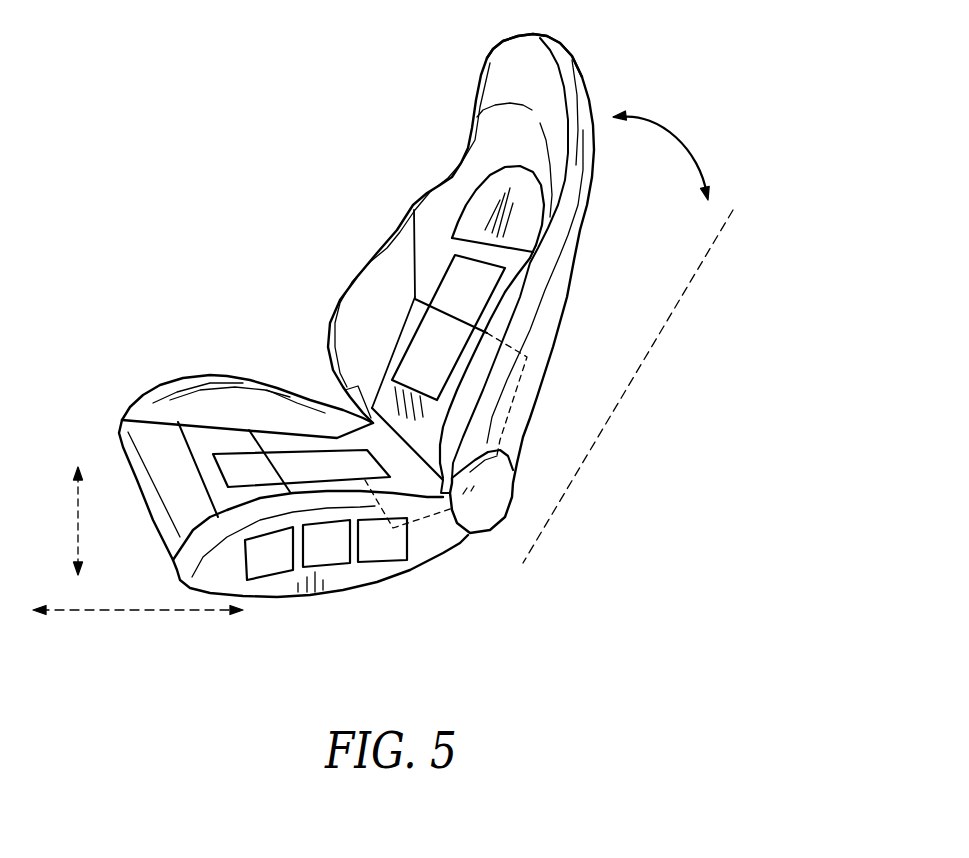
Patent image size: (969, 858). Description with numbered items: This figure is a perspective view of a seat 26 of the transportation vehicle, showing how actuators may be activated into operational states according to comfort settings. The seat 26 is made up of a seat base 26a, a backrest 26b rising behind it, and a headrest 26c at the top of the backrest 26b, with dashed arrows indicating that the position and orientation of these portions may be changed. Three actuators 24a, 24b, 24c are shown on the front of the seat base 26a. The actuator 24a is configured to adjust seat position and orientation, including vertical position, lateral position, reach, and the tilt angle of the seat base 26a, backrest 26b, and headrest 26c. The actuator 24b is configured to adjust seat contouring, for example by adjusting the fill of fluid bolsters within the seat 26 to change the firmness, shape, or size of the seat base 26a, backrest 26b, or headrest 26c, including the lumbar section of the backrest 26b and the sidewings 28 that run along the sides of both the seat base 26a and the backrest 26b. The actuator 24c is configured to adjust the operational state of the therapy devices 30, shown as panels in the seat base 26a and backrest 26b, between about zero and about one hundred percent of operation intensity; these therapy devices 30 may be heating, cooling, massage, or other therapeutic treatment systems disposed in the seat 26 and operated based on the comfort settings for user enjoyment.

The seat 26 is at (383, 342).
The seat base 26a is at (293, 475).
The backrest 26b is at (383, 230).
The headrest 26c is at (485, 50).
The sidewings 28 is at (376, 319).
The therapy devices 30 is at (457, 270).
The actuator 24a is at (277, 563).
The actuator 24b is at (323, 557).
The actuator 24c is at (392, 547).